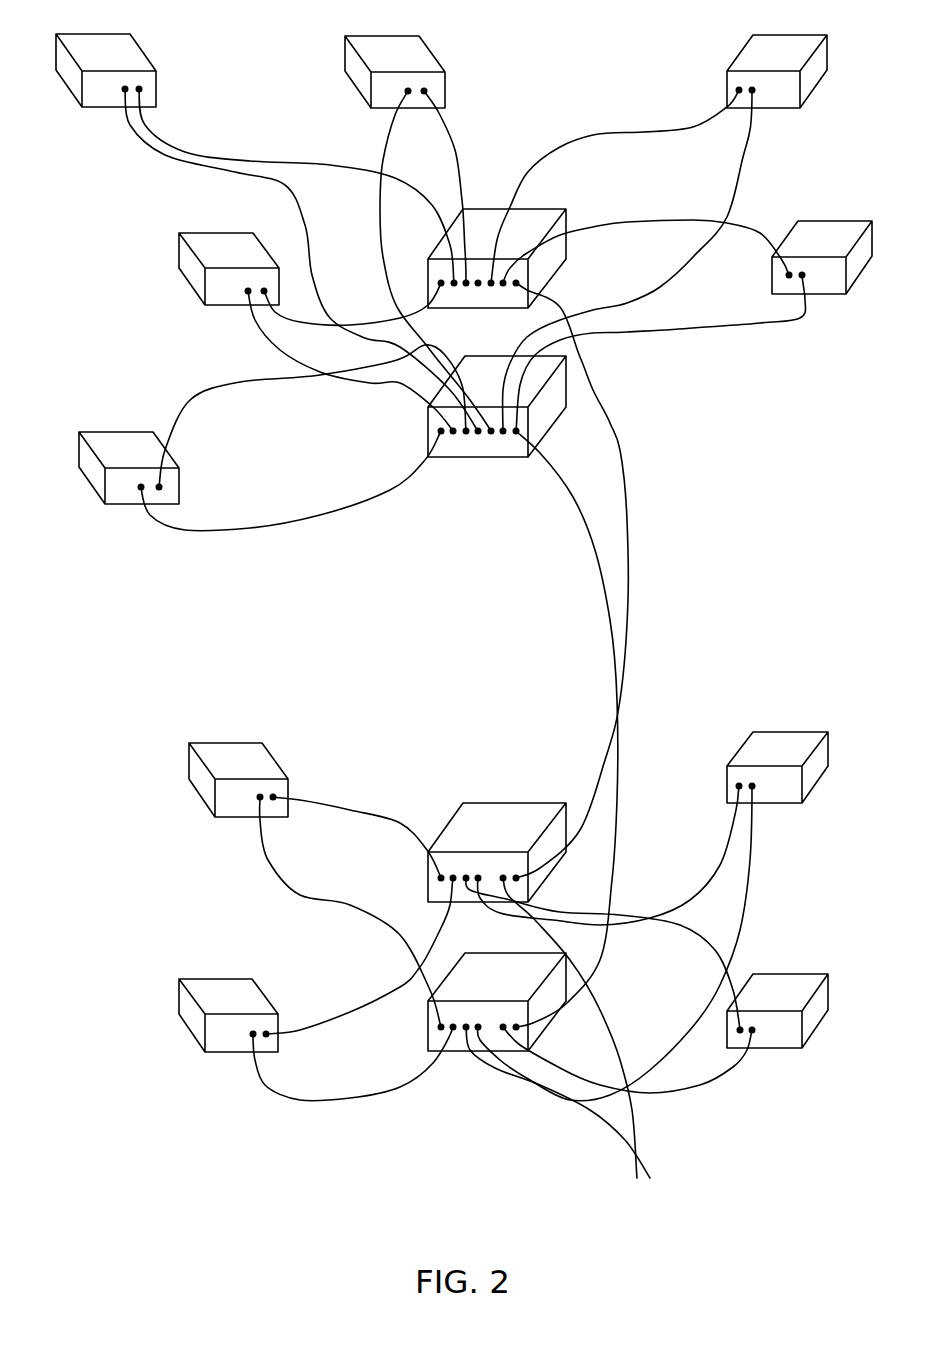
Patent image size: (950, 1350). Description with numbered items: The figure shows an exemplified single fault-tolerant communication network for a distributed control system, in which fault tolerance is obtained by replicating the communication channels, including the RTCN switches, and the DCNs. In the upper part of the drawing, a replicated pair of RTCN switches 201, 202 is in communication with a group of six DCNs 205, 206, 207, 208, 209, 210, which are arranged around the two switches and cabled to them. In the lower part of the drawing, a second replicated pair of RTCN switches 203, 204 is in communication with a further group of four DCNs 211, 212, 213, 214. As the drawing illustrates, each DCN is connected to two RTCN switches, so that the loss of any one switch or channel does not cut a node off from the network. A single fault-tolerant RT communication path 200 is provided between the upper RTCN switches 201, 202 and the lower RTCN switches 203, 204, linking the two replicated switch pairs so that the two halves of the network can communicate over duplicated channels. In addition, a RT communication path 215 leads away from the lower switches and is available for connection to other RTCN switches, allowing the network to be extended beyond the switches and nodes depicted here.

The single fault-tolerant RT communication path 200 is at (610, 655).
The RTCN switch 201 is at (506, 239).
The RTCN switch 202 is at (497, 423).
The RTCN switch 203 is at (497, 836).
The RTCN switch 204 is at (497, 1028).
The DCN 205 is at (129, 452).
The DCN 206 is at (229, 253).
The DCN 207 is at (106, 54).
The DCN 208 is at (395, 56).
The DCN 209 is at (777, 55).
The DCN 210 is at (822, 242).
The DCN 211 is at (228, 999).
The DCN 212 is at (238, 763).
The DCN 213 is at (777, 750).
The DCN 214 is at (777, 994).
The RT communication path 215 is at (564, 1044).